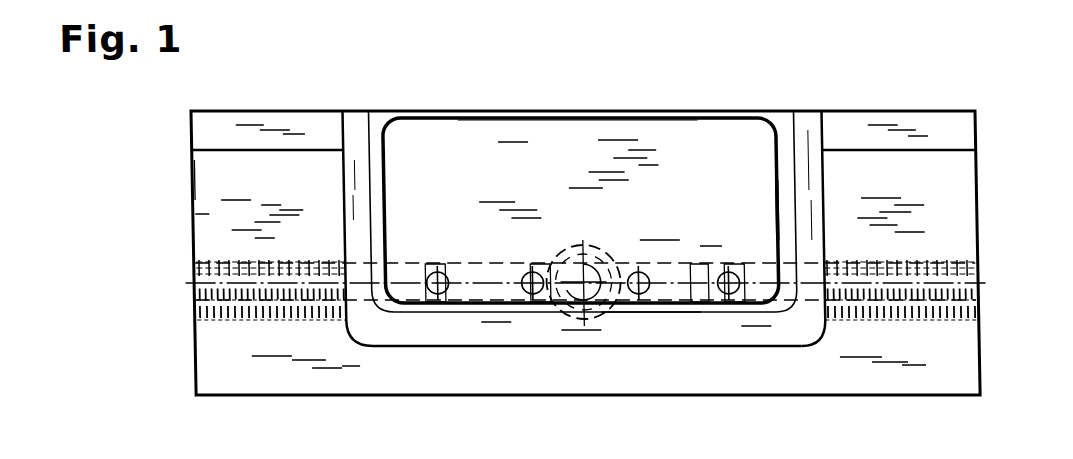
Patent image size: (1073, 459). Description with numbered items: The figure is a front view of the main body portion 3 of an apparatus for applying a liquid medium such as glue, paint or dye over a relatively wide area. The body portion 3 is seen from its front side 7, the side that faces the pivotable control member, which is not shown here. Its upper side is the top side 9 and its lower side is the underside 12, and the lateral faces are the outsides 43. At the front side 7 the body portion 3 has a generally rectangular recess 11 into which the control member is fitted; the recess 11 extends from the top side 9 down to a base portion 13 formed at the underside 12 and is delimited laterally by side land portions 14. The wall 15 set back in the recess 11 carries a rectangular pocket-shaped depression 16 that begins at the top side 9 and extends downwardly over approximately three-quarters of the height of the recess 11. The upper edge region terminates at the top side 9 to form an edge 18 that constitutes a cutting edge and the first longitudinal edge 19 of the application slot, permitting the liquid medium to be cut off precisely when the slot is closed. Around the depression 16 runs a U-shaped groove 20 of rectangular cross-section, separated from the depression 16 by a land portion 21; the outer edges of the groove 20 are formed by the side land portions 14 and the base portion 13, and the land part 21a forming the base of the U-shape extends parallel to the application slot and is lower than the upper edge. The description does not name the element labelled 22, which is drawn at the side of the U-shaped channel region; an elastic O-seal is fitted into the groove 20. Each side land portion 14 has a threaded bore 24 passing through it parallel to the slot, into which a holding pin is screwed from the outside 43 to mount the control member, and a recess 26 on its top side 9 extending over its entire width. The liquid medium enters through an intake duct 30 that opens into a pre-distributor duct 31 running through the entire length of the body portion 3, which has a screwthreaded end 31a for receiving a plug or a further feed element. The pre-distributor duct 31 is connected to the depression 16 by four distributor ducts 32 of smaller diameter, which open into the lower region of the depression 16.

The main body portion 3 is at (122, 208).
The front side 7 is at (950, 170).
The top side 9 is at (282, 112).
The recess 11 is at (786, 208).
The underside 12 is at (250, 397).
The base portion 13 is at (215, 357).
The side land portions 14 is at (222, 190).
The wall 15 is at (437, 135).
The rectangular pocket-shaped depression 16 is at (567, 201).
The edge 18 is at (557, 110).
The first longitudinal edge 19 is at (492, 118).
The groove 20 is at (814, 128).
The land portion 21 is at (787, 150).
The land part 21a is at (668, 313).
The channel wall 22 is at (354, 165).
The bore 24 is at (193, 312).
The recess 26 is at (233, 130).
The intake duct 30 is at (556, 303).
The pre-distributor duct 31 is at (482, 293).
The screwthreaded end 31a is at (193, 266).
The distributor ducts 32 is at (432, 300).
The outside 43 is at (194, 216).